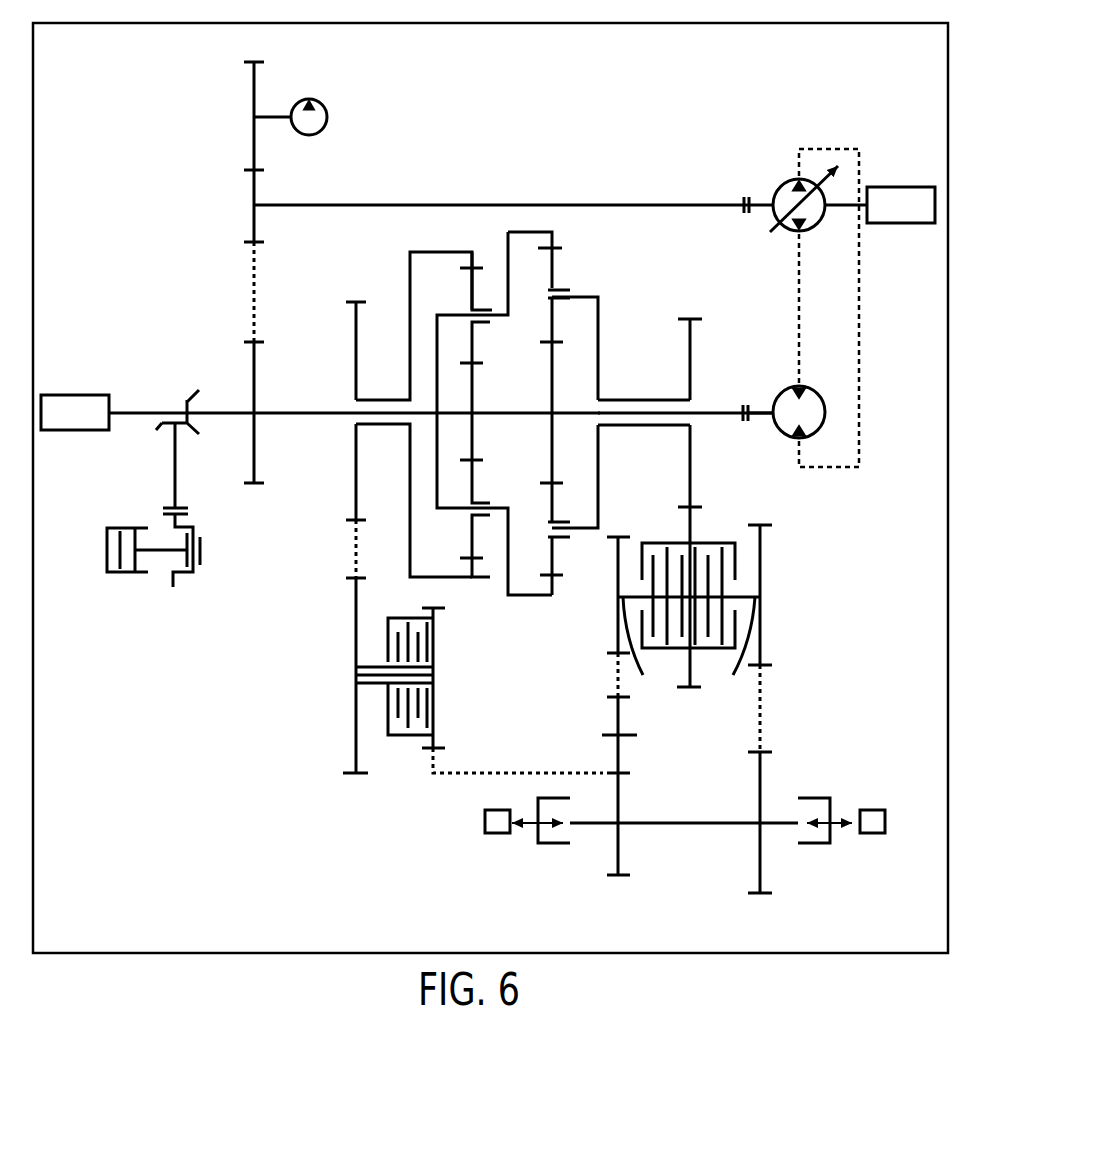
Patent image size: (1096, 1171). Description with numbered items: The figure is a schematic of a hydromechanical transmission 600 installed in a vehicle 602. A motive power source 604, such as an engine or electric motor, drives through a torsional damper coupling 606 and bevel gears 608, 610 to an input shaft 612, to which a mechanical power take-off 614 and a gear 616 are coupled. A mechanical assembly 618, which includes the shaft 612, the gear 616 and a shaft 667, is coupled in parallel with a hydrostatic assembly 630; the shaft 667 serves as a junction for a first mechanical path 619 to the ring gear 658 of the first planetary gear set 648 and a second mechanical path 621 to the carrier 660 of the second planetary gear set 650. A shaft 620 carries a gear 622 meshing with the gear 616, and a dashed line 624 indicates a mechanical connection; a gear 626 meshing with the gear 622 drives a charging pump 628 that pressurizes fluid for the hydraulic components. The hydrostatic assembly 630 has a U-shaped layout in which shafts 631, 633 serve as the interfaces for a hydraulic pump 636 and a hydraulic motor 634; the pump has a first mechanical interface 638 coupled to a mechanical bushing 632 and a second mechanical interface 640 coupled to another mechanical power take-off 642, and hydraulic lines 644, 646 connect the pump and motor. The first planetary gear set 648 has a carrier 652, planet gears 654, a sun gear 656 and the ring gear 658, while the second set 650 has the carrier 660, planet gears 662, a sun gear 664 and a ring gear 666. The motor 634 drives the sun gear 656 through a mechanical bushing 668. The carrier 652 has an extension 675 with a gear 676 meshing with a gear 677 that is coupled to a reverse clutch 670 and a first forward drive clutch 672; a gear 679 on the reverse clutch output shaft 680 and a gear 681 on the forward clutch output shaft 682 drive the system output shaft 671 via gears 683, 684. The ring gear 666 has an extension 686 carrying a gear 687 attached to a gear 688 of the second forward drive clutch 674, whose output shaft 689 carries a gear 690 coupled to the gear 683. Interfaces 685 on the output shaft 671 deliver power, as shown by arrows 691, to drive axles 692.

The transmission 600 is at (897, 72).
The vehicle 602 is at (37, 23).
The motive power source 604 is at (175, 624).
The torsional damper coupling 606 is at (172, 504).
The gear 608 is at (157, 426).
The gear 610 is at (197, 391).
The input shaft 612 is at (225, 410).
The mechanical power take-off 614 is at (39, 394).
The gear 616 is at (257, 386).
The mechanical assembly 618 is at (190, 268).
The first mechanical path 619 is at (317, 357).
The shaft 620 is at (319, 204).
The second mechanical path 621 is at (324, 434).
The gear 622 is at (254, 183).
The dashed line 624 is at (252, 302).
The gear 626 is at (265, 76).
The charging pump 628 is at (327, 117).
The hydrostatic assembly 630 is at (884, 157).
The shaft 631 is at (770, 206).
The mechanical bushing 632 is at (745, 192).
The shaft 633 is at (762, 417).
The hydraulic motor 634 is at (786, 392).
The hydraulic pump 636 is at (787, 180).
The first mechanical interface 638 is at (769, 210).
The second mechanical interface 640 is at (829, 213).
The mechanical power take-off 642 is at (875, 224).
The hydraulic line 644 is at (840, 149).
The hydraulic line 646 is at (800, 313).
The first planetary gear set 648 is at (580, 248).
The second planetary gear set 650 is at (397, 248).
The carrier 652 is at (578, 292).
The planet gears 654 is at (552, 248).
The sun gear 656 is at (550, 400).
The ring gear 658 is at (538, 230).
The carrier 660 is at (466, 314).
The planet gears 662 is at (470, 272).
The sun gear 664 is at (472, 400).
The ring gear 666 is at (472, 252).
The shaft 667 is at (325, 410).
The mechanical bushing 668 is at (745, 400).
The reverse clutch 670 is at (650, 526).
The output shaft 671 is at (649, 824).
The first forward drive clutch 672 is at (718, 526).
The second forward drive clutch 674 is at (393, 605).
The extension 675 is at (616, 400).
The gear 676 is at (688, 357).
The gear 677 is at (690, 528).
The gear 679 is at (617, 642).
The output shaft 680 is at (619, 697).
The gear 681 is at (761, 650).
The output shaft 682 is at (737, 708).
The gear 683 is at (620, 797).
The gear 684 is at (760, 790).
The interfaces 685 is at (550, 859).
The extension 686 is at (382, 398).
The gear 687 is at (356, 298).
The gear 688 is at (356, 627).
The output shaft 689 is at (356, 675).
The gear 690 is at (440, 747).
The arrows 691 is at (542, 823).
The drive axles 692 is at (485, 823).